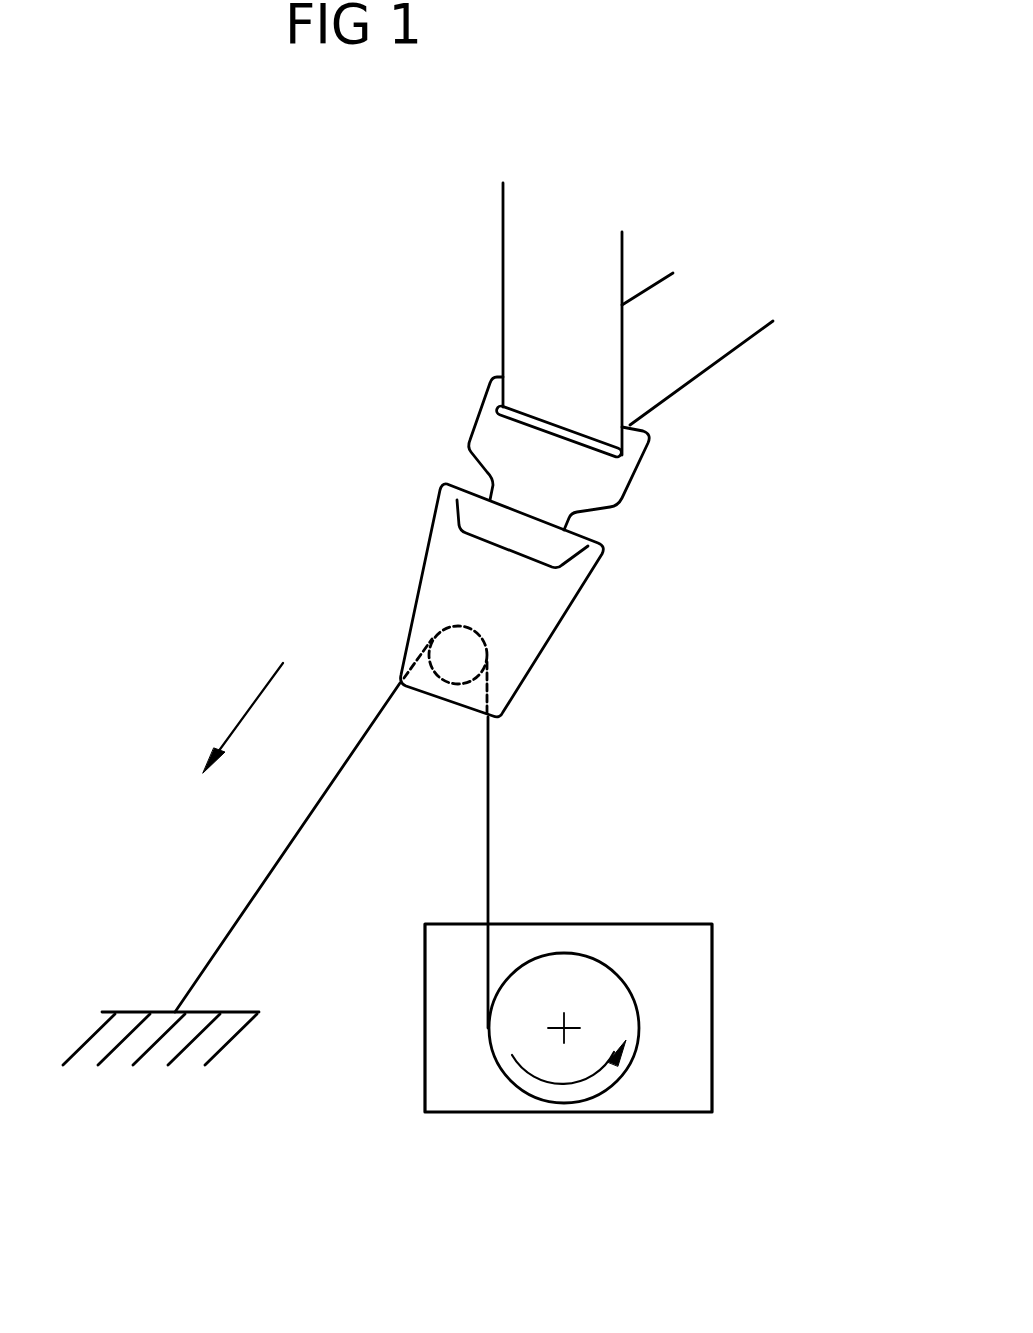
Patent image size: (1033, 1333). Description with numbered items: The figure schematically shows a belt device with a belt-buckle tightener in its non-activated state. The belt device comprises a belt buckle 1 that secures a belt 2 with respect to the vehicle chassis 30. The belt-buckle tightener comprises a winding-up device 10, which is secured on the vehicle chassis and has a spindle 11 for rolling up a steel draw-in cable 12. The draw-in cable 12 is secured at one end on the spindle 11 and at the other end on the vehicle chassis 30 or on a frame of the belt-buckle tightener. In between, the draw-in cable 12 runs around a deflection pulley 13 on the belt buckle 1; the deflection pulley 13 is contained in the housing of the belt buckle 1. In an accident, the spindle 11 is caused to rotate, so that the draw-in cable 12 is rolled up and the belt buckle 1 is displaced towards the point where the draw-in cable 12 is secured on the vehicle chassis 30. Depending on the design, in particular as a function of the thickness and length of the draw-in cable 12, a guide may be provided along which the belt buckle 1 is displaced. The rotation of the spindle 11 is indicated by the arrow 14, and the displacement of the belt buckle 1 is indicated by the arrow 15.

The belt buckle 1 is at (568, 547).
The belt 2 is at (670, 322).
The winding-up device 10 is at (666, 1016).
The spindle 11 is at (686, 1028).
The draw-in cable 12 is at (587, 872).
The deflection pulley 13 is at (409, 587).
The arrow 14 is at (569, 1157).
The arrow 15 is at (243, 674).
The vehicle chassis 30 is at (208, 874).